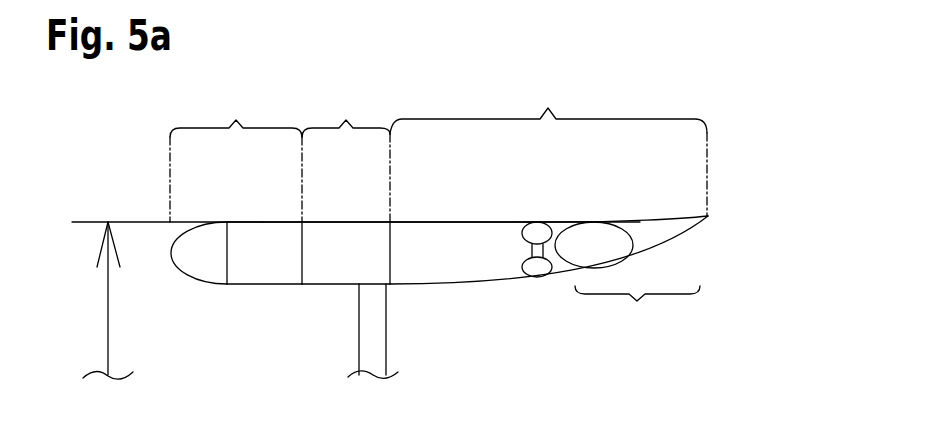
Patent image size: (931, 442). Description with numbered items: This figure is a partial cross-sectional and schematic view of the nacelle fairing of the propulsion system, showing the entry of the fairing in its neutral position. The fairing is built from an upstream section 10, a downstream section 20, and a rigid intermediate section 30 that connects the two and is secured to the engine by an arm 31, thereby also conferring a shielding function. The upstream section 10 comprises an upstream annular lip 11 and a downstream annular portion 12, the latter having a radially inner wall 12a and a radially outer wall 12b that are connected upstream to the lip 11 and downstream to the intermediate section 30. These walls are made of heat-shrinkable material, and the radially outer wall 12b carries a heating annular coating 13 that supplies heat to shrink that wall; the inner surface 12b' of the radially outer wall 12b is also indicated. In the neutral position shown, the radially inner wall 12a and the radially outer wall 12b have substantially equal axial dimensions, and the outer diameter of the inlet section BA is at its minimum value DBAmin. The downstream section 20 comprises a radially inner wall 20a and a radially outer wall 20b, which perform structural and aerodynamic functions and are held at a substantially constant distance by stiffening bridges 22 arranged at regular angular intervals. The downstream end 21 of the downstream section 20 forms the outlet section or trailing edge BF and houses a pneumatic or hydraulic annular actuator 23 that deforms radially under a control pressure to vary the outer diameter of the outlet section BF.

The upstream section 10 is at (236, 158).
The upstream annular lip 11 is at (215, 263).
The downstream annular portion 12 is at (260, 263).
The radially inner wall 12a is at (282, 285).
The radially outer wall 12b is at (226, 183).
The inner surface 12b' is at (171, 208).
The heating annular coating 13 is at (270, 221).
The downstream section 20 is at (548, 148).
The radially inner wall 20a is at (408, 285).
The radially outer wall 20b is at (443, 221).
The downstream end 21 is at (637, 308).
The stiffening bridges 22 is at (537, 245).
The annular actuator 23 is at (593, 233).
The intermediate section 30 is at (346, 189).
The arm 31 is at (368, 362).
The inlet section BA is at (164, 262).
The outlet section BF is at (718, 222).
The minimum outer diameter of the inlet section DBAmin is at (86, 300).